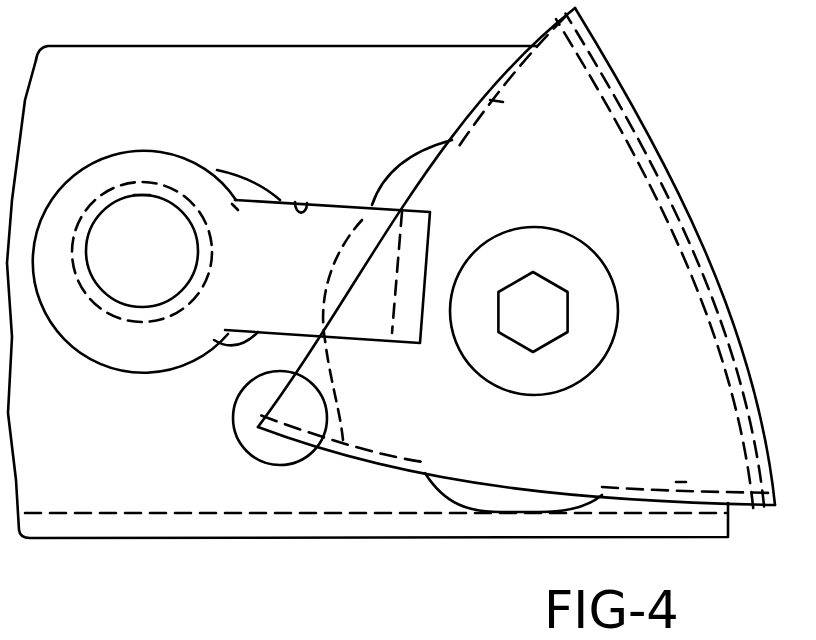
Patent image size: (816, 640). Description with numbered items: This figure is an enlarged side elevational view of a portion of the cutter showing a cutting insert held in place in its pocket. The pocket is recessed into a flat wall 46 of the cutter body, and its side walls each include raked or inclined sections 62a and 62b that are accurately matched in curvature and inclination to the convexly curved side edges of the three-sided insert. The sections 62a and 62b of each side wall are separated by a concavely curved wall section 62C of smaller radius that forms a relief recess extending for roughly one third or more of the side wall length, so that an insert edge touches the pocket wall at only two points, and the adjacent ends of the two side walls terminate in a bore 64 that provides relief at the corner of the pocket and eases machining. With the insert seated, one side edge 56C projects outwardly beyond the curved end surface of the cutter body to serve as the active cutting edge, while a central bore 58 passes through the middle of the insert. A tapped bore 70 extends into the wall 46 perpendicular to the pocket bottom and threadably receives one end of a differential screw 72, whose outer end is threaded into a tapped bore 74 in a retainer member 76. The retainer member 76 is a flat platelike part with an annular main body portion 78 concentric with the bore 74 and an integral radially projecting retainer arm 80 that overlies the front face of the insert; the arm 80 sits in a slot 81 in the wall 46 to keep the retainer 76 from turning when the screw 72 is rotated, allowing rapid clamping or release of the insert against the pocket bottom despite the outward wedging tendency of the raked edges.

The flat wall 46 is at (378, 97).
The projecting side edge 56C is at (652, 134).
The central bore 58 is at (562, 240).
The raked side wall section 62a is at (497, 105).
The raked side wall section 62b is at (345, 366).
The concavely curved relief wall section 62C is at (412, 165).
The relief bore 64 is at (245, 428).
The tapped bore 70 is at (142, 198).
The differential screw 72 is at (160, 263).
The tapped bore 74 is at (135, 293).
The retainer member 76 is at (236, 208).
The annular main body portion 78 is at (72, 328).
The retainer arm 80 is at (285, 278).
The slot 81 is at (303, 201).